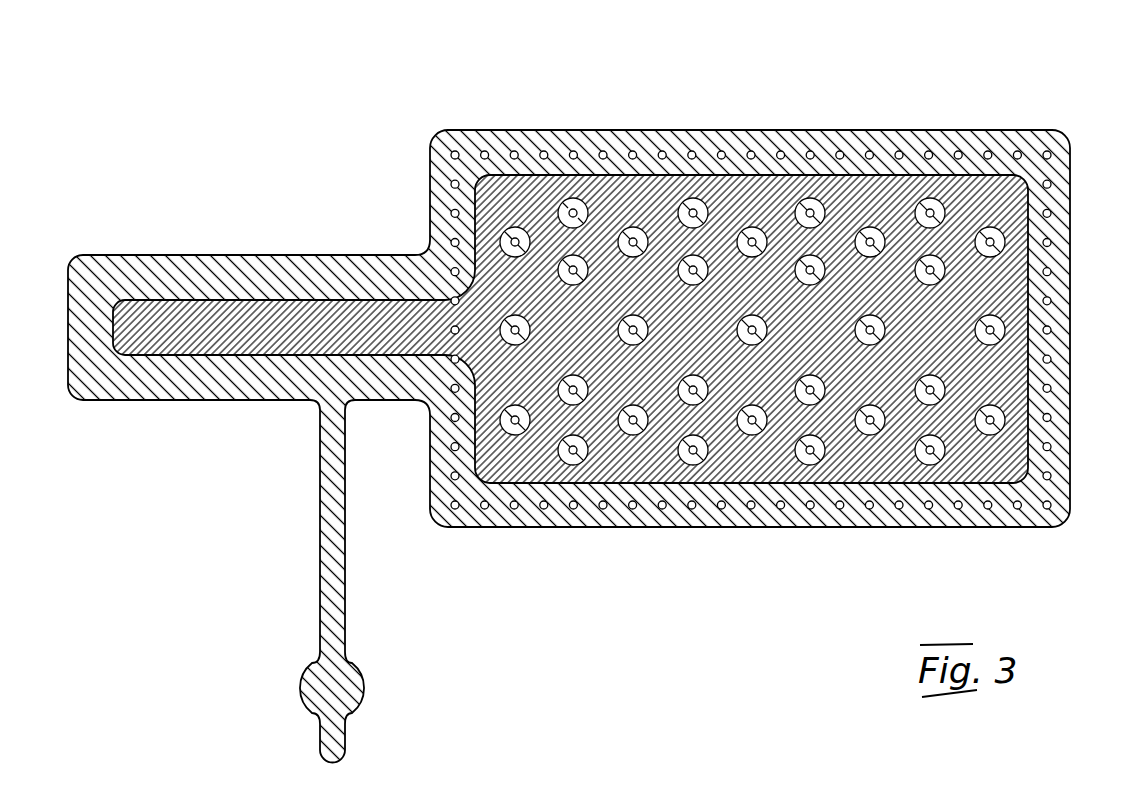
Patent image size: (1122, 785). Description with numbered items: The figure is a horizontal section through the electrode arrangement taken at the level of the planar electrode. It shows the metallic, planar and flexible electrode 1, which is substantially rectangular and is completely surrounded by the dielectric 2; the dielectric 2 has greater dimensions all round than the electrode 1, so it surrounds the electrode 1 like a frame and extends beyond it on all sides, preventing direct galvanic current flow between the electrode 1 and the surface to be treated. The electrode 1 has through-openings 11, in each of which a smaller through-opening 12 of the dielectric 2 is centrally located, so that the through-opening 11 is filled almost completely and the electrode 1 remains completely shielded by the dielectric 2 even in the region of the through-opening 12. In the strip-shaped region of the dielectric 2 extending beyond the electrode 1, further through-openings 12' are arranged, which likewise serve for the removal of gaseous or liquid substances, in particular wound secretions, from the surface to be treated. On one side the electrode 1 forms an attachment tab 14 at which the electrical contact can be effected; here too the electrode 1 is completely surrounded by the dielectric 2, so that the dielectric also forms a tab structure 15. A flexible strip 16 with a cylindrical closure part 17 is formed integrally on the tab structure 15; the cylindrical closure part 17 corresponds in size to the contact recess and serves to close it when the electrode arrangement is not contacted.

The electrode 1 is at (622, 467).
The dielectric 2 is at (845, 132).
The through-opening of the electrode 11 is at (578, 196).
The through-opening of the dielectric 12 is at (552, 123).
The further through-openings 12' is at (755, 94).
The attachment tab 14 is at (188, 332).
The tab structure 15 is at (230, 378).
The flexible strip 16 is at (318, 560).
The cylindrical closure part 17 is at (342, 697).